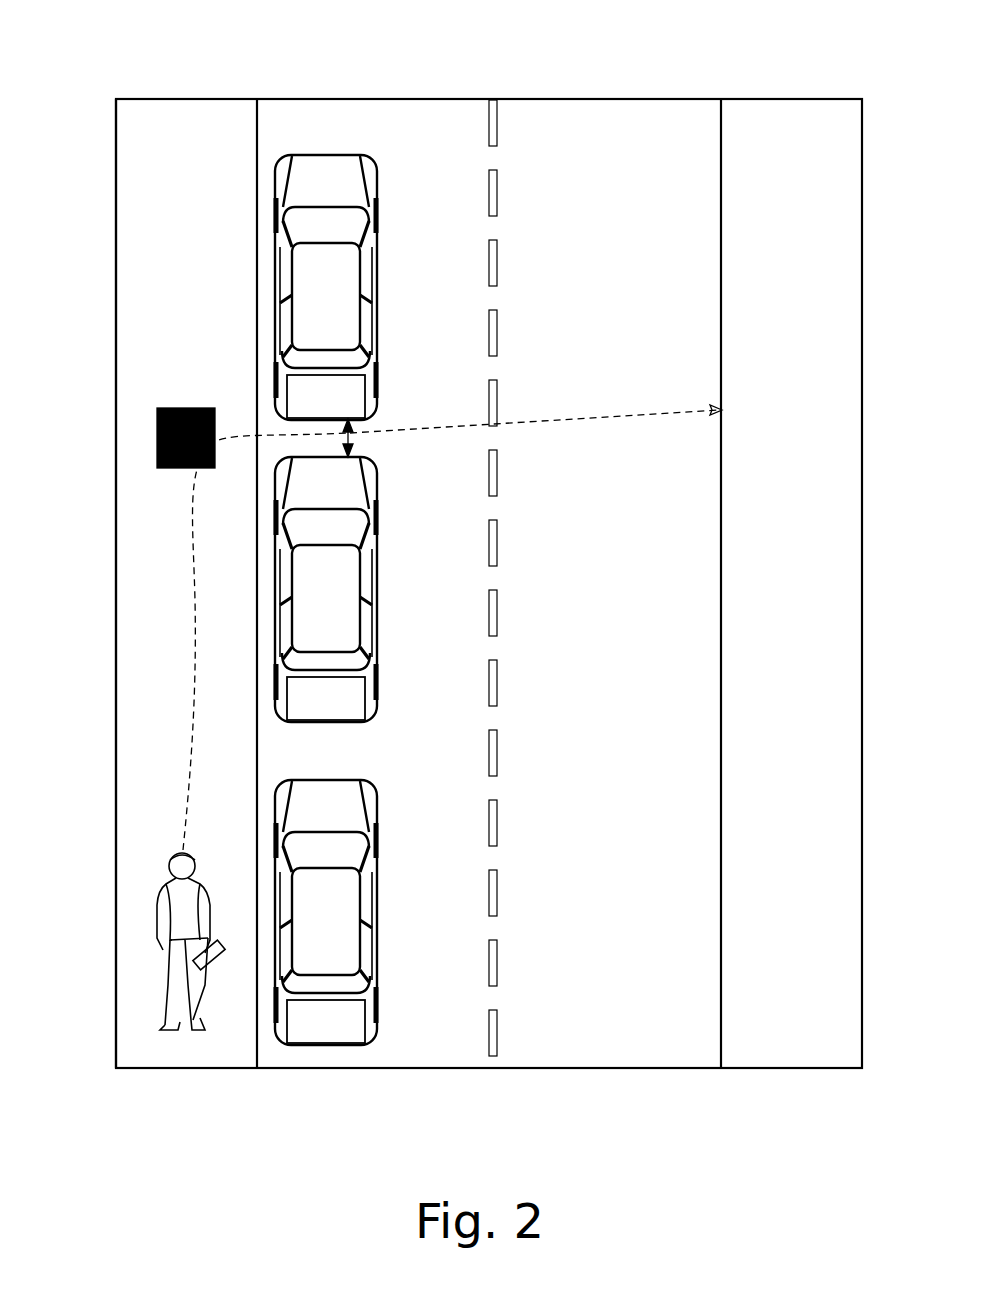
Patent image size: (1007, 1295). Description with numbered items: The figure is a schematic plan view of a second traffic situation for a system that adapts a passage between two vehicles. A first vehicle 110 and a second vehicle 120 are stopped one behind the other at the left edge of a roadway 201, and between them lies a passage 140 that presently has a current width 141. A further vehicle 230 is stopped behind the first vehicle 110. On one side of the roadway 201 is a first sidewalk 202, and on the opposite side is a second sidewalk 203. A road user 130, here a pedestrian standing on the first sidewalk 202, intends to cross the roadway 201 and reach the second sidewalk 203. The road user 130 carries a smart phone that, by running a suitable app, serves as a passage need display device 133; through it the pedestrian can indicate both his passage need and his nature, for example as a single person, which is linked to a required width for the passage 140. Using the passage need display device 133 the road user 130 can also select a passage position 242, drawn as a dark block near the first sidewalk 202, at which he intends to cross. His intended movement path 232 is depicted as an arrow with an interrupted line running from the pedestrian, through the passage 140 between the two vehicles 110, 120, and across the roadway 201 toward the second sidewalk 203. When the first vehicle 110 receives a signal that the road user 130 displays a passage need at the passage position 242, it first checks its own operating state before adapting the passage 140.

The first vehicle 110 is at (347, 478).
The second vehicle 120 is at (323, 162).
The road user 130 is at (175, 896).
The passage need display device 133 is at (213, 972).
The passage 140 is at (291, 448).
The current width 141 is at (352, 435).
The roadway 201 is at (418, 112).
The first sidewalk 202 is at (183, 112).
The second sidewalk 203 is at (763, 112).
The further vehicle 230 is at (347, 803).
The intended movement path 232 is at (590, 423).
The passage position 242 is at (157, 435).